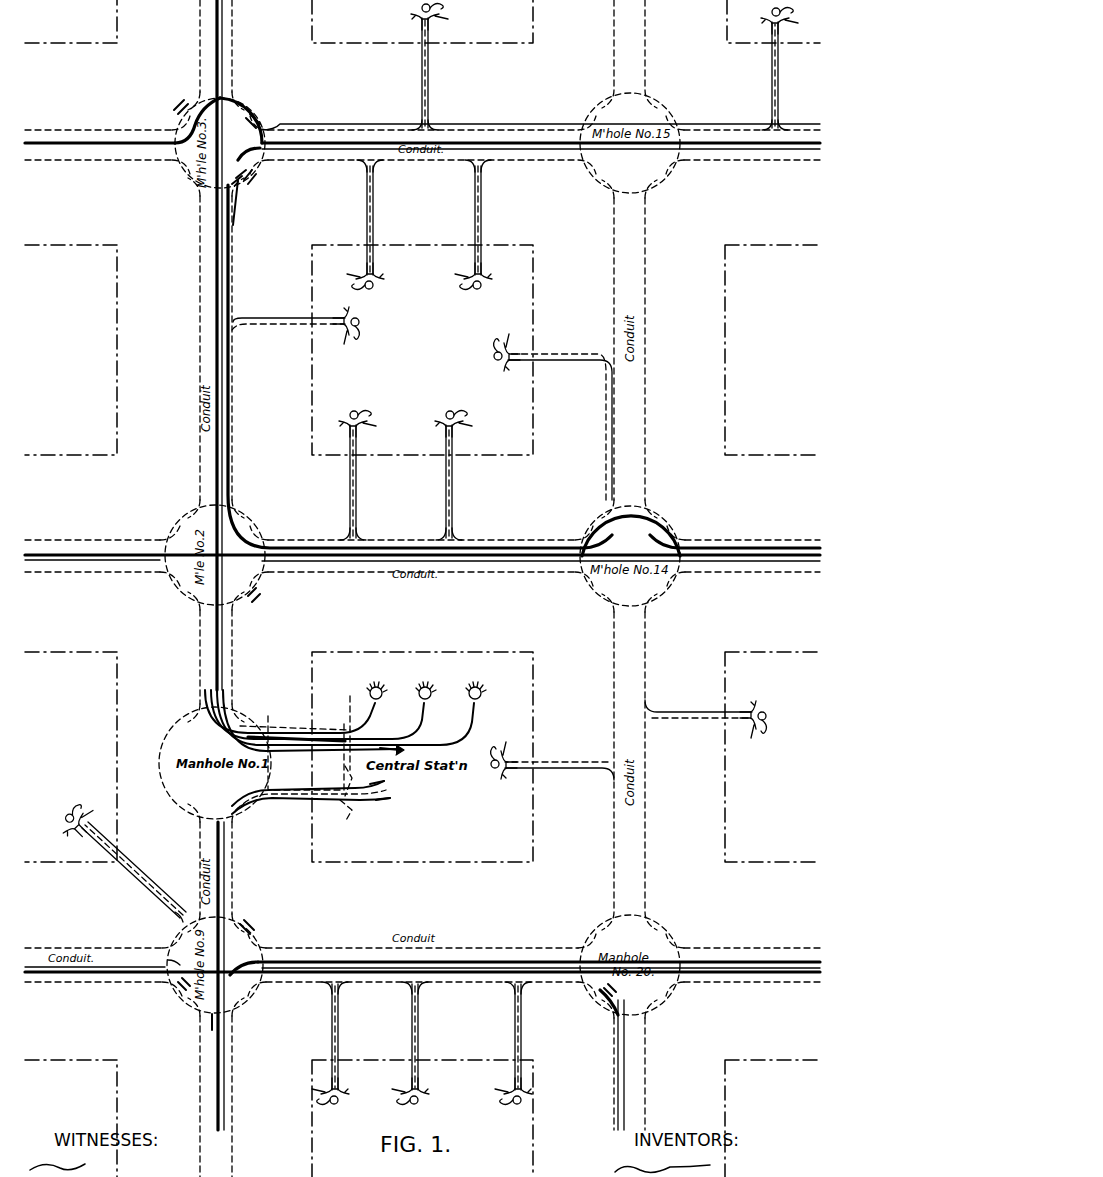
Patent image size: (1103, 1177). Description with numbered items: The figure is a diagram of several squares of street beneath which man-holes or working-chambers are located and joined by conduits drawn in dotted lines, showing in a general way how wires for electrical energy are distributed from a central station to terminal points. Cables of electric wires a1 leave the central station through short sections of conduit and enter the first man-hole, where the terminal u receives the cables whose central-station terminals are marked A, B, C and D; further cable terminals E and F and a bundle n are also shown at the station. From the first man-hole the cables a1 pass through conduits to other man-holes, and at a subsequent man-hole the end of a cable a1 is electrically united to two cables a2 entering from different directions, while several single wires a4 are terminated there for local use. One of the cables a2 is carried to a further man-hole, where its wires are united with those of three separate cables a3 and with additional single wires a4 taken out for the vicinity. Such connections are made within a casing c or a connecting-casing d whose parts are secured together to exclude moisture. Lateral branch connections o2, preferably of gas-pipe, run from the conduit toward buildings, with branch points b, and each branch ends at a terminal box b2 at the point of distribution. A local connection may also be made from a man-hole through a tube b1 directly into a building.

The cable of electric wires a1 is at (135, 560).
The cable a2 is at (195, 1020).
The cable a3 is at (230, 72).
The single wire a4 is at (290, 124).
The branch connection b is at (428, 104).
The tube b1 is at (170, 916).
The terminal box b2 is at (440, 14).
The casing c is at (262, 598).
The connecting-casing d is at (176, 104).
The lateral branch connection o2 is at (428, 88).
The cable bundle n is at (308, 712).
The terminal u is at (364, 824).
The central-station cable terminal A is at (384, 693).
The central-station cable terminal B is at (433, 693).
The central-station cable terminal C is at (483, 693).
The central-station cable terminal D is at (397, 748).
The cable E is at (382, 782).
The cable F is at (389, 799).